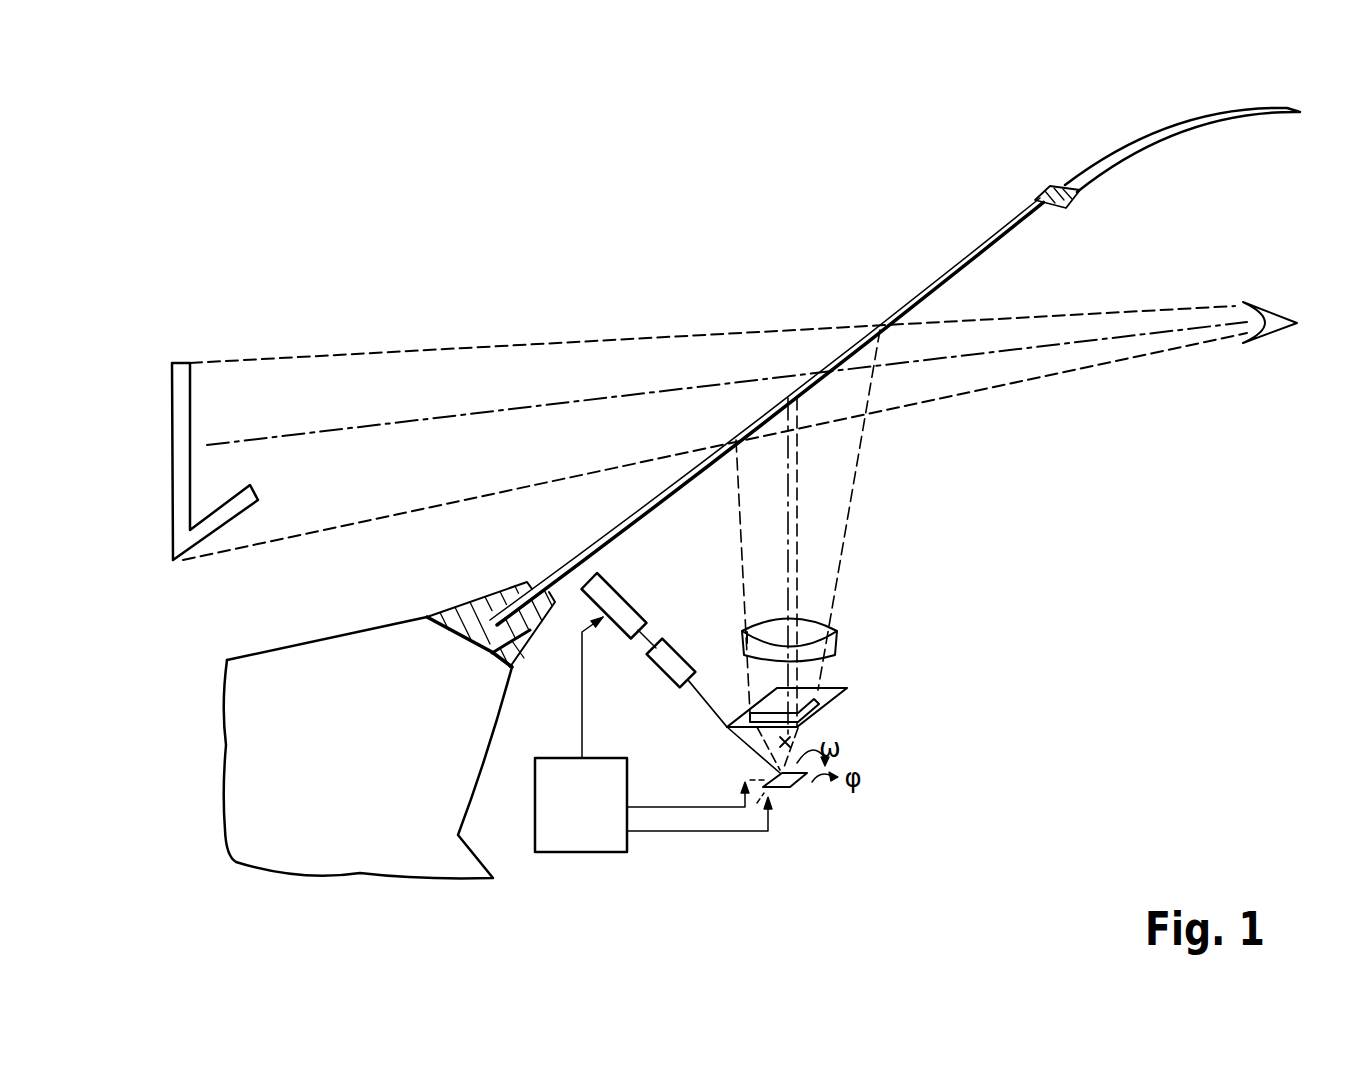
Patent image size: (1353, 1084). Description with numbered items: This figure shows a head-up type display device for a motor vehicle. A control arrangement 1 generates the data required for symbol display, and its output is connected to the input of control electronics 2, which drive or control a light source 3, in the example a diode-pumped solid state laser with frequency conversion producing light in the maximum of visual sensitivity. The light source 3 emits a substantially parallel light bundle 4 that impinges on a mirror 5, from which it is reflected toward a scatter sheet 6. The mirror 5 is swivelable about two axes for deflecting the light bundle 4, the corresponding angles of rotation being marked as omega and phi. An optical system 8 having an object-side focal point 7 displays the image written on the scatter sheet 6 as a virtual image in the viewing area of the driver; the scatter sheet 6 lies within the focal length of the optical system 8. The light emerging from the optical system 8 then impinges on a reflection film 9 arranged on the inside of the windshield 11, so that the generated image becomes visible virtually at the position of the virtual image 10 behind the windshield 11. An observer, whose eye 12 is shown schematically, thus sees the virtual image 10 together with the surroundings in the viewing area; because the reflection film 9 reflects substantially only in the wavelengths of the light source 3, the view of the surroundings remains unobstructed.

The control arrangement 1 is at (585, 840).
The control electronics 2 is at (619, 624).
The light source 3 is at (669, 675).
The light bundle 4 is at (713, 707).
The mirror 5 is at (798, 789).
The scatter sheet 6 is at (838, 690).
The object-side focal point 7 is at (790, 742).
The optical system 8 is at (822, 632).
The reflection film 9 is at (721, 457).
The virtual image 10 is at (178, 563).
The windshield 11 is at (1039, 210).
The eye 12 is at (1263, 352).